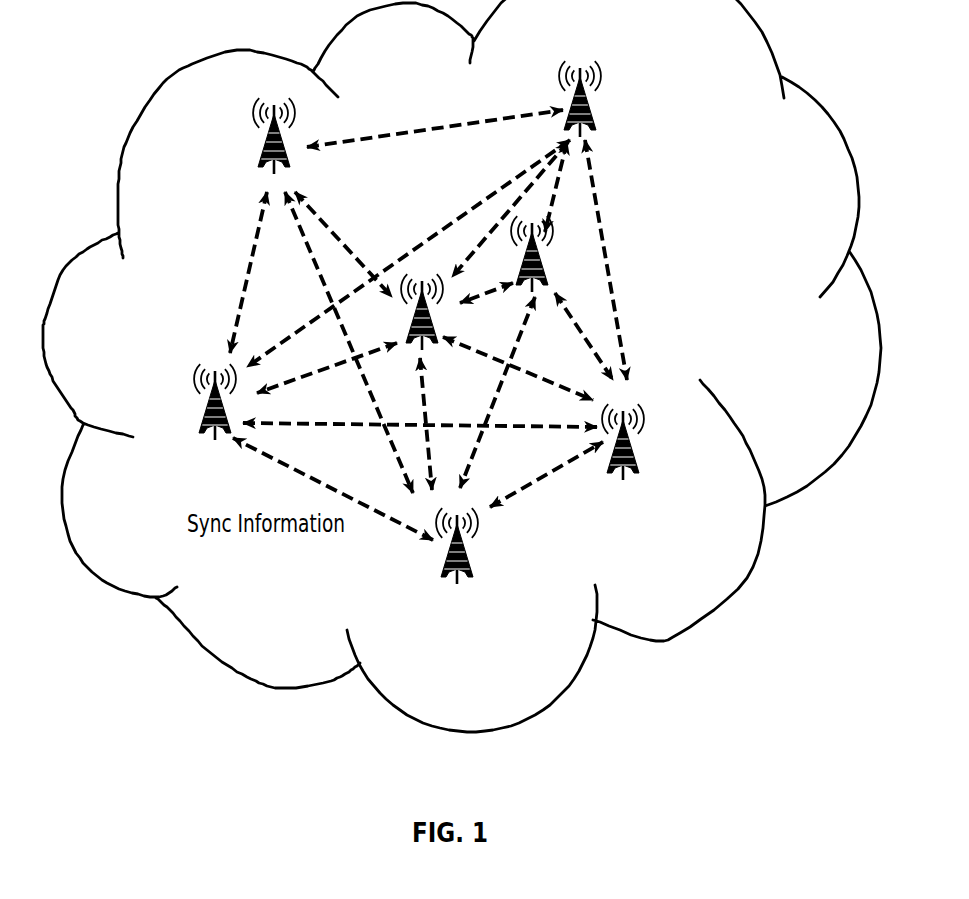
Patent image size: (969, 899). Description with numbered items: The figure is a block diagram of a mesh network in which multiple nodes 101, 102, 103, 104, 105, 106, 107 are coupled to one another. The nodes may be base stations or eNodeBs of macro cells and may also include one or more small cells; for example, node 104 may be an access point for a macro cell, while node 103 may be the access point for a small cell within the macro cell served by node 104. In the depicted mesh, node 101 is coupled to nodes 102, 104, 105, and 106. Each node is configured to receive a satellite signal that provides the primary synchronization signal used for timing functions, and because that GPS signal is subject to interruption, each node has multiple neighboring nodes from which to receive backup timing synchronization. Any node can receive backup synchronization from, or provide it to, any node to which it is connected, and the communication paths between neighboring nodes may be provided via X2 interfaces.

The node 101 is at (288, 154).
The node 102 is at (593, 118).
The node 103 is at (545, 262).
The node 104 is at (433, 316).
The node 105 is at (469, 548).
The node 106 is at (203, 412).
The node 107 is at (637, 452).